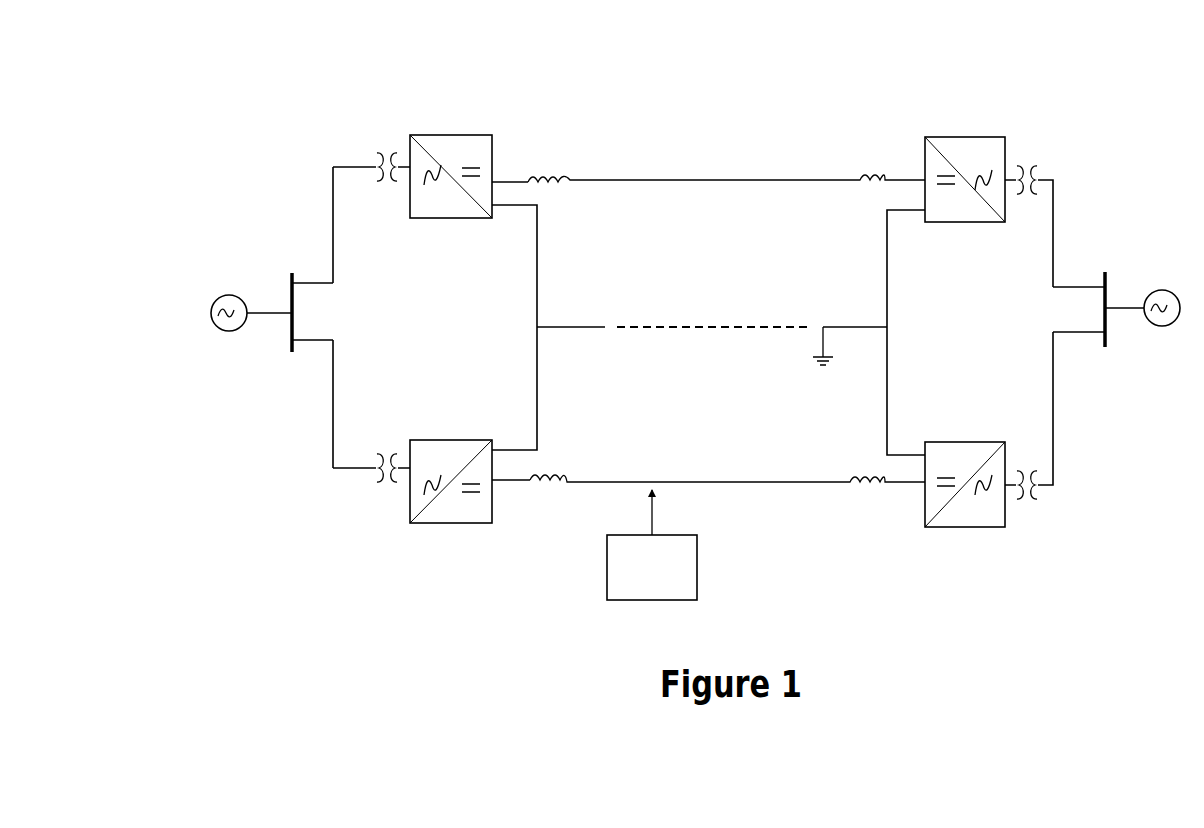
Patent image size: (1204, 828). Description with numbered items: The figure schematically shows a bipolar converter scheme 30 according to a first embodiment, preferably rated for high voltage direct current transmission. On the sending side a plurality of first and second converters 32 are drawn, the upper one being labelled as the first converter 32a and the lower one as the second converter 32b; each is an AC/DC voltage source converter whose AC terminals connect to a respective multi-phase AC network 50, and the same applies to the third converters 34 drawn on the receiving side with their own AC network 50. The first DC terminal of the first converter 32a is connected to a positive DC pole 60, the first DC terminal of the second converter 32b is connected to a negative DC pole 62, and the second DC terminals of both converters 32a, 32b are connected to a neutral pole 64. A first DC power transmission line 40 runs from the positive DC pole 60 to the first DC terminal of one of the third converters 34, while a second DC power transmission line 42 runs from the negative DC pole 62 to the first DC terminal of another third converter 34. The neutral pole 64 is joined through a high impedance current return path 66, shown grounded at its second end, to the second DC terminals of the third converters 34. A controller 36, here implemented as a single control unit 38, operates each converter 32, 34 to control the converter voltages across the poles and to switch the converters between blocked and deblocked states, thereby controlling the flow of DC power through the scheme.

The bipolar converter scheme 30 is at (618, 138).
The first and second converters 32 is at (441, 329).
The first converter 32a is at (455, 208).
The second converter 32b is at (443, 445).
The third converters 34 is at (970, 208).
The controller 36 is at (605, 570).
The control unit 38 is at (629, 588).
The first DC power transmission line 40 is at (712, 178).
The second DC power transmission line 42 is at (712, 478).
The multi-phase AC network 50 is at (230, 295).
The positive DC pole 60 is at (497, 177).
The negative DC pole 62 is at (496, 483).
The neutral pole 64 is at (544, 322).
The high impedance current return path 66 is at (720, 317).